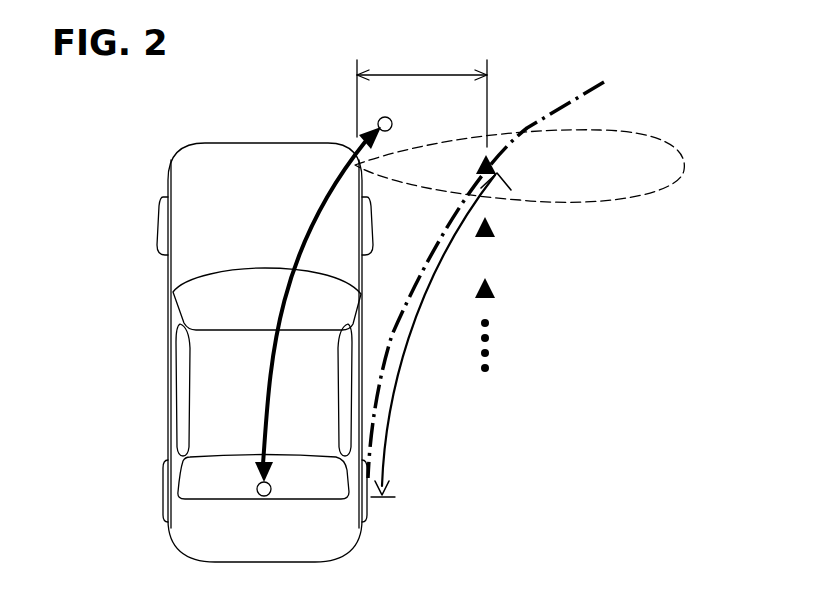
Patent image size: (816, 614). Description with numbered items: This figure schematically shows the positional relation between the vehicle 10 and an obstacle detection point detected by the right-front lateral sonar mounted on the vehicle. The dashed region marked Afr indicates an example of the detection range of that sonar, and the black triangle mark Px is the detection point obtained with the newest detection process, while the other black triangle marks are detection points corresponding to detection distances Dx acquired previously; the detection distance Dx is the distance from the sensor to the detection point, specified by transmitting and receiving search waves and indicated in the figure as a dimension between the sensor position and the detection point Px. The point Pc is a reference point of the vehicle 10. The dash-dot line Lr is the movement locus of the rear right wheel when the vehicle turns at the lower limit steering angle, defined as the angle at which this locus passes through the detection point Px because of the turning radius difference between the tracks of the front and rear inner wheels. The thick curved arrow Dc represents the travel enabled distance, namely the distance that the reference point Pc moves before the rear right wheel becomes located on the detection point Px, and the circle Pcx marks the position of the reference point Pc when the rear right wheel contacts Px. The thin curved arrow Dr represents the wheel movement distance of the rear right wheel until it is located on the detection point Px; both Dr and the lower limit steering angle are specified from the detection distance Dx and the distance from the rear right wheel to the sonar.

The vehicle 10 is at (168, 283).
The reference point Pc is at (258, 495).
The position of the reference point Pcx is at (392, 121).
The travel enabled distance Dc is at (308, 231).
The detection distance Dx is at (422, 99).
The movement locus Lr is at (537, 128).
The detection range Afr is at (653, 137).
The detection point Px is at (497, 168).
The movement distance Dr is at (394, 393).